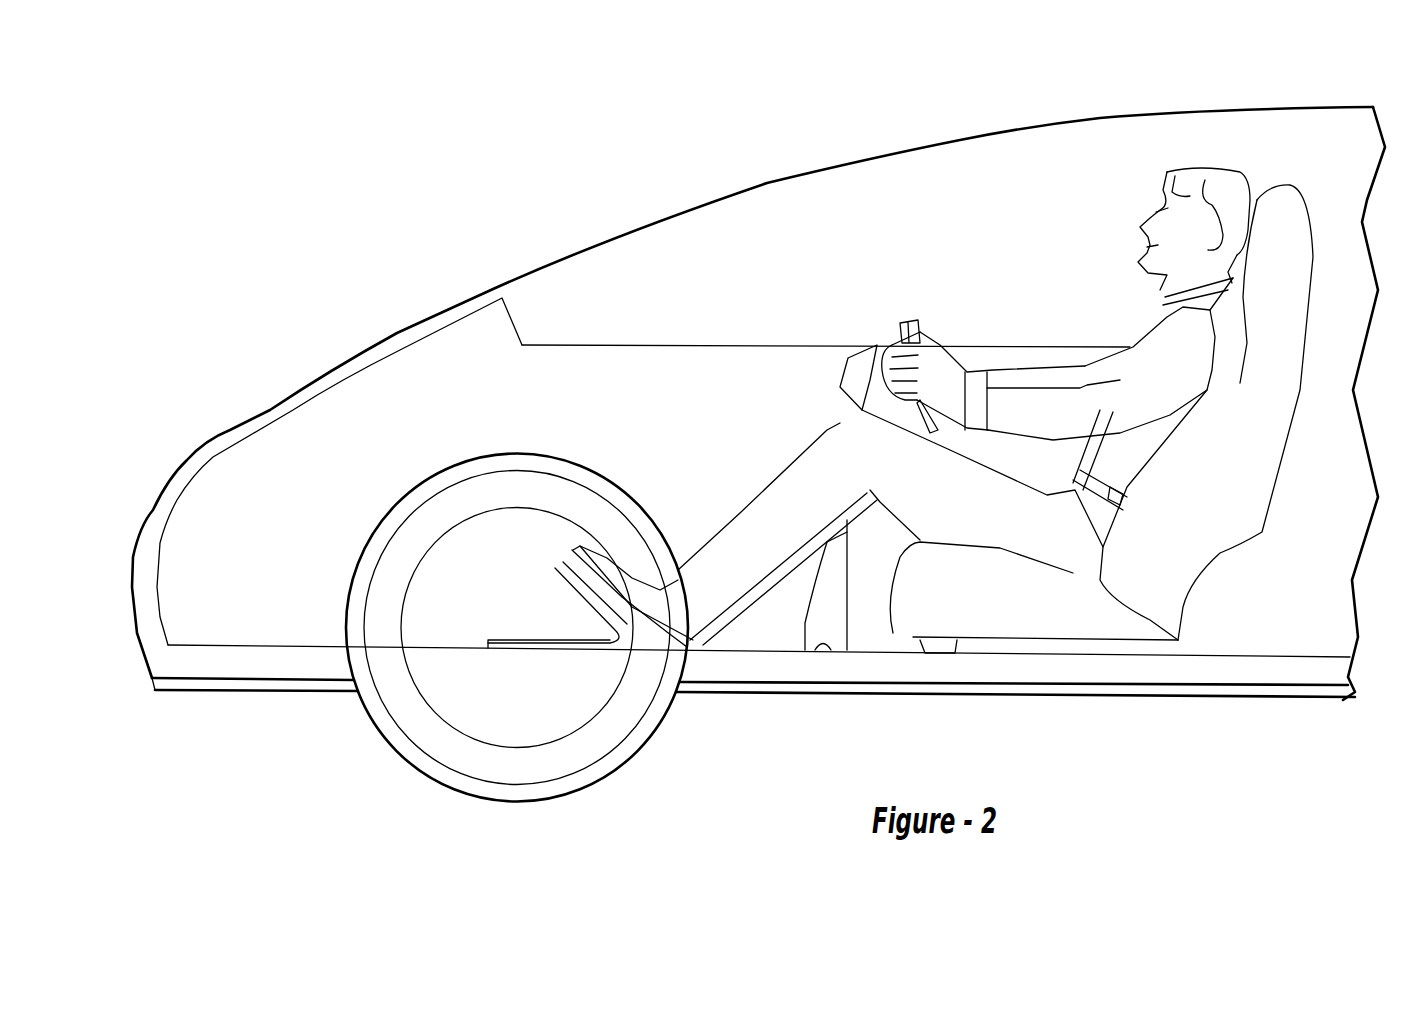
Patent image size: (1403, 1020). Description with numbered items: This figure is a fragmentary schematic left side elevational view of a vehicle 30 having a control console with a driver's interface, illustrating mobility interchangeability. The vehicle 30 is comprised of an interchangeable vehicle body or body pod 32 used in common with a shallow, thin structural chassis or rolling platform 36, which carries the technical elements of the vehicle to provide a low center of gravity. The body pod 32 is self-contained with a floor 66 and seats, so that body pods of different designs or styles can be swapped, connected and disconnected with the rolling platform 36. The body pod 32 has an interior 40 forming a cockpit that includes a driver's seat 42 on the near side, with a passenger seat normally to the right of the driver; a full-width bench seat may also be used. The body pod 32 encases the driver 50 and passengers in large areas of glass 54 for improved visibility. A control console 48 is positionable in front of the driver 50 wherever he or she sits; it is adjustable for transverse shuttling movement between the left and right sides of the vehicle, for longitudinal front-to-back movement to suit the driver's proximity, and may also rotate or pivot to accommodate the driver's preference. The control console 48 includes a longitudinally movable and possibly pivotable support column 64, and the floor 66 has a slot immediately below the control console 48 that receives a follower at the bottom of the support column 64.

The vehicle 30 is at (519, 219).
The vehicle body pod 32 is at (395, 332).
The structural chassis or rolling platform 36 is at (793, 687).
The interior 40 is at (911, 329).
The driver's seat 42 is at (1218, 483).
The control console 48 is at (889, 314).
The driver 50 is at (1218, 185).
The glass 54 is at (768, 182).
The support column 64 is at (835, 583).
The floor 66 is at (1085, 667).